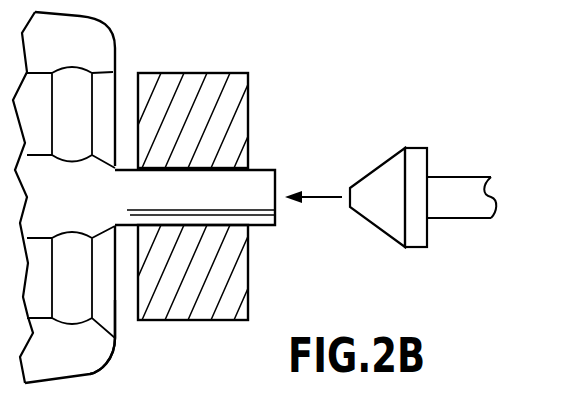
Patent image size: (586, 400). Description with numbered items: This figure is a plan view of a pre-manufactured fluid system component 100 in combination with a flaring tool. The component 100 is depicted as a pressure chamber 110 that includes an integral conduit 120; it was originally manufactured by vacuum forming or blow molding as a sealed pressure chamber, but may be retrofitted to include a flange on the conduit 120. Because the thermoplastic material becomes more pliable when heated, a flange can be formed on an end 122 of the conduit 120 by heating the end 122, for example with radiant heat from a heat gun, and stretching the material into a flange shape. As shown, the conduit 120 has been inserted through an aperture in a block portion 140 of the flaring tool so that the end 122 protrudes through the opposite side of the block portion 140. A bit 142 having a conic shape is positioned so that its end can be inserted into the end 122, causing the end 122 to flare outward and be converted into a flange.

The component 100 is at (134, 36).
The pressure chamber 110 is at (118, 348).
The conduit 120 is at (263, 169).
The end 122 is at (276, 213).
The block portion 140 is at (250, 92).
The bit 142 is at (414, 147).